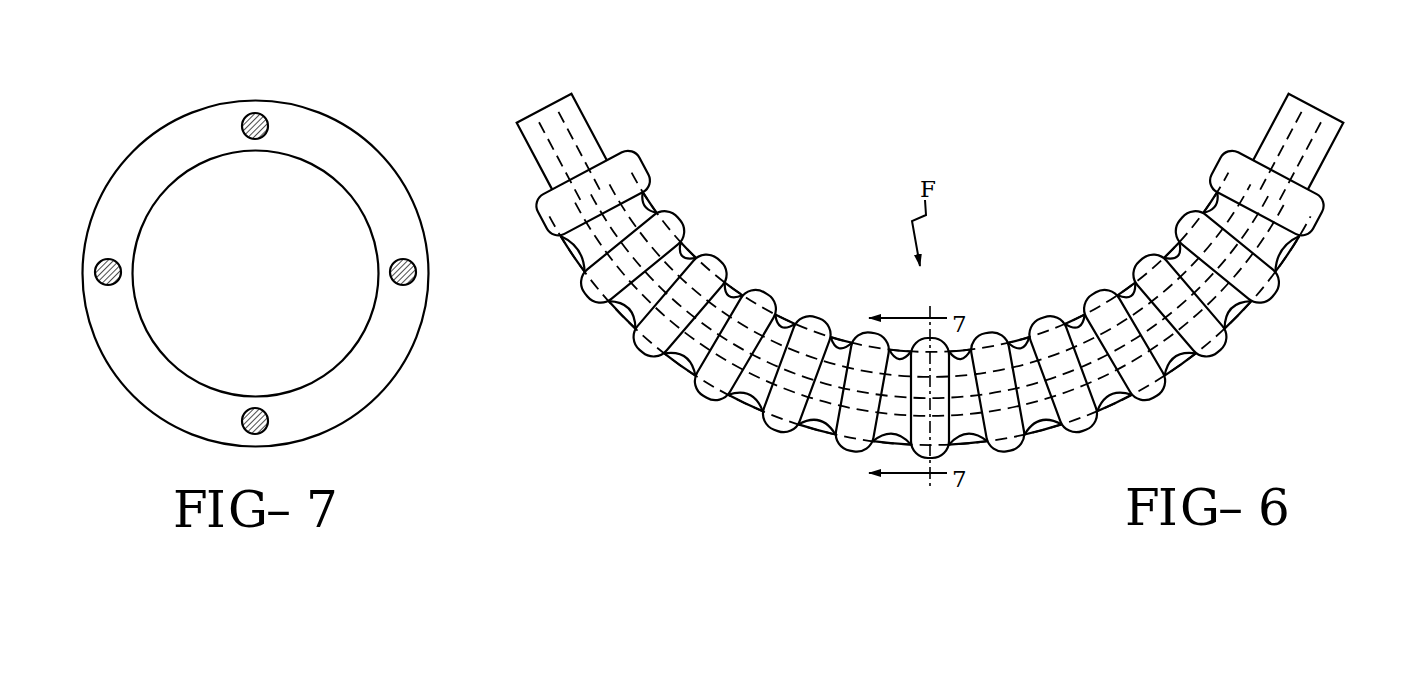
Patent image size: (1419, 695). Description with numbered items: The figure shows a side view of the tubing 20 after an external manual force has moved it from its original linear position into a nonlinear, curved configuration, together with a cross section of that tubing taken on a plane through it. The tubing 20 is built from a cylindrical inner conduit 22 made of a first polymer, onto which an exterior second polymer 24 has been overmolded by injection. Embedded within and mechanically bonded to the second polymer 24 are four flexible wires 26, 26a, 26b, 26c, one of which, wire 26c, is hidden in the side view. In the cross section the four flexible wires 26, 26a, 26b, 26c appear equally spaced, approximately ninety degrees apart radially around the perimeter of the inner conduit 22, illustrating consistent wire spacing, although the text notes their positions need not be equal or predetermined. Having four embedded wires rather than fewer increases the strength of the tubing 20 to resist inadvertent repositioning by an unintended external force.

In FIG. 6, the tubing 20 is at (950, 232).
In FIG. 7, the inner conduit 22 is at (352, 356).
In FIG. 6, the inner conduit 22 is at (1319, 98).
In FIG. 7, the second polymer 24 is at (181, 142).
In FIG. 6, the second polymer 24 is at (1227, 158).
In FIG. 7, the flexible wire 26 is at (265, 116).
In FIG. 6, the flexible wire 26 is at (1123, 276).
In FIG. 7, the flexible wire 26a is at (241, 424).
In FIG. 6, the flexible wire 26a is at (1259, 317).
In FIG. 7, the flexible wire 26b is at (414, 281).
In FIG. 6, the flexible wire 26b is at (1264, 232).
In FIG. 7, the flexible wire 26c is at (97, 261).